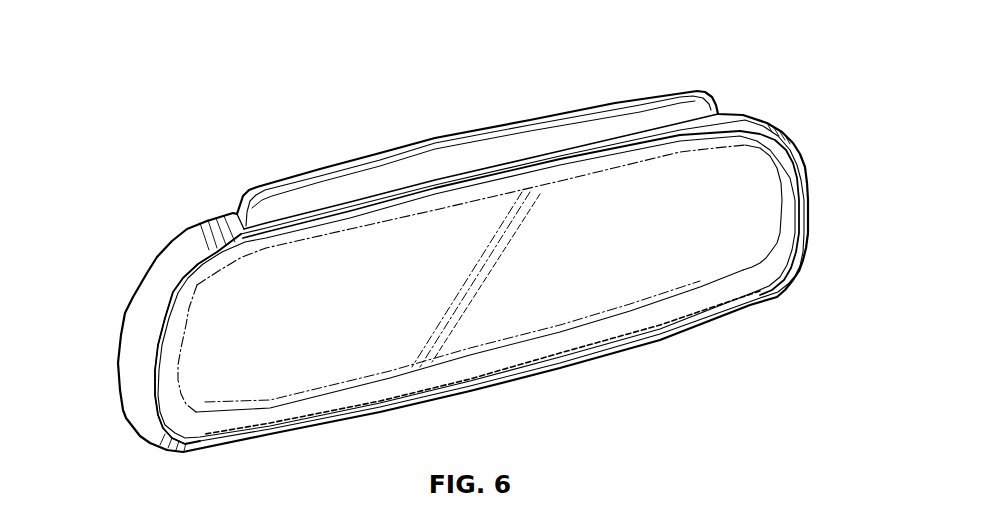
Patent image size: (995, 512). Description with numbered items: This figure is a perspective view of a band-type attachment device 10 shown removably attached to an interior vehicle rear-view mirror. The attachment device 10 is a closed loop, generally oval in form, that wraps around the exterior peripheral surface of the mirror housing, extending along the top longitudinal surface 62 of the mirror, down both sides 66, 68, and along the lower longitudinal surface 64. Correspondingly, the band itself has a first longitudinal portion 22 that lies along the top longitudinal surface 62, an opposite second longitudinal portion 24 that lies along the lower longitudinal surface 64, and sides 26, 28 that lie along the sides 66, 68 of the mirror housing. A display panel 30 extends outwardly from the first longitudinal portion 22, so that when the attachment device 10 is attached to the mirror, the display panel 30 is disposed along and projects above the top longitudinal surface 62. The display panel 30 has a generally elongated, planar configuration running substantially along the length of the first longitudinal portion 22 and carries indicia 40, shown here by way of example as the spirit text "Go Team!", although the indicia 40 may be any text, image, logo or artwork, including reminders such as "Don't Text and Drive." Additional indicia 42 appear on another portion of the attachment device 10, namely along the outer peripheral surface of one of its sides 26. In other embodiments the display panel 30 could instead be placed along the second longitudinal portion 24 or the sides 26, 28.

The attachment device 10 is at (650, 58).
The first longitudinal portion 22 is at (660, 142).
The second longitudinal portion 24 is at (510, 370).
The side 26 is at (158, 278).
The side 28 is at (798, 183).
The display panel 30 is at (293, 180).
The indicia 40 is at (428, 158).
The indicia 42 is at (135, 312).
The top longitudinal surface 62 is at (467, 190).
The lower longitudinal surface 64 is at (497, 357).
The side 66 is at (174, 347).
The side 68 is at (788, 196).